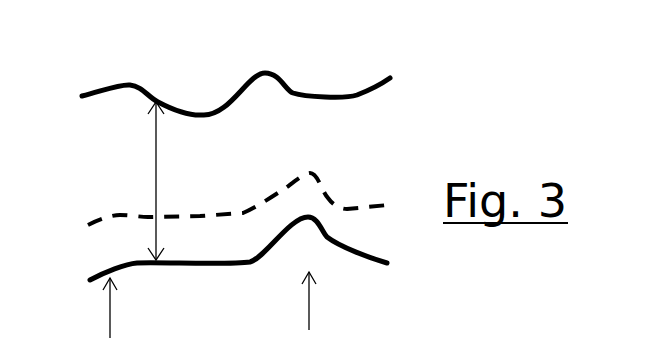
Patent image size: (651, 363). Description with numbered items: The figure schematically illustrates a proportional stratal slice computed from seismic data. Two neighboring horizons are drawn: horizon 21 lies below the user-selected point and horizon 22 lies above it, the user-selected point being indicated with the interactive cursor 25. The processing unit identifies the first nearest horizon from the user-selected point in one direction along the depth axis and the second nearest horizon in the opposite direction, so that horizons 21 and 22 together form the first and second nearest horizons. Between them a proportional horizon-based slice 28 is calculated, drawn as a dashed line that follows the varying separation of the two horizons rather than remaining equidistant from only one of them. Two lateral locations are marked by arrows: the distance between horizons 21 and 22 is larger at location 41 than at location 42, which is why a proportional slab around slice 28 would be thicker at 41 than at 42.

The horizon 22 is at (283, 84).
The horizon 21 is at (232, 265).
The proportional horizon-based slice 28 is at (327, 186).
The interactive cursor 25 is at (146, 219).
The location indicated at 41 is at (110, 310).
The location indicated at 42 is at (309, 300).